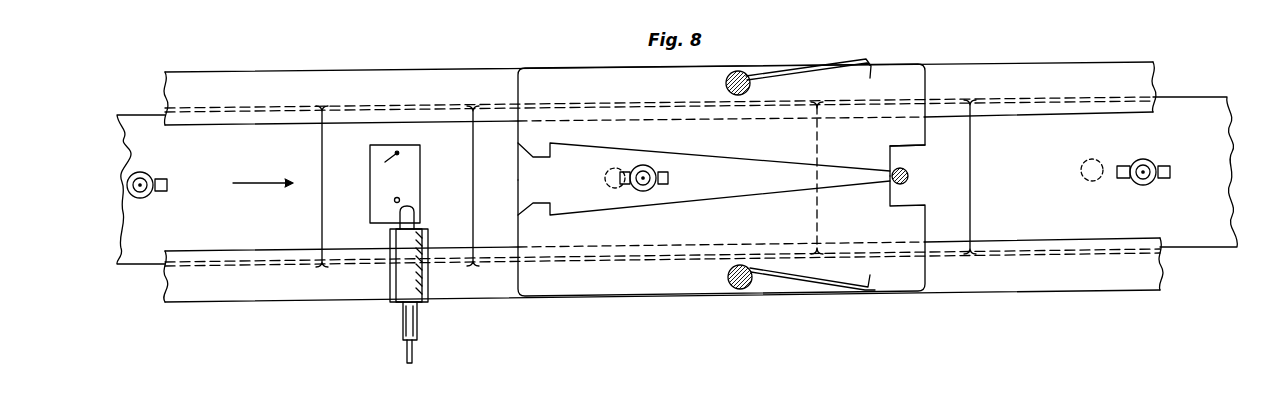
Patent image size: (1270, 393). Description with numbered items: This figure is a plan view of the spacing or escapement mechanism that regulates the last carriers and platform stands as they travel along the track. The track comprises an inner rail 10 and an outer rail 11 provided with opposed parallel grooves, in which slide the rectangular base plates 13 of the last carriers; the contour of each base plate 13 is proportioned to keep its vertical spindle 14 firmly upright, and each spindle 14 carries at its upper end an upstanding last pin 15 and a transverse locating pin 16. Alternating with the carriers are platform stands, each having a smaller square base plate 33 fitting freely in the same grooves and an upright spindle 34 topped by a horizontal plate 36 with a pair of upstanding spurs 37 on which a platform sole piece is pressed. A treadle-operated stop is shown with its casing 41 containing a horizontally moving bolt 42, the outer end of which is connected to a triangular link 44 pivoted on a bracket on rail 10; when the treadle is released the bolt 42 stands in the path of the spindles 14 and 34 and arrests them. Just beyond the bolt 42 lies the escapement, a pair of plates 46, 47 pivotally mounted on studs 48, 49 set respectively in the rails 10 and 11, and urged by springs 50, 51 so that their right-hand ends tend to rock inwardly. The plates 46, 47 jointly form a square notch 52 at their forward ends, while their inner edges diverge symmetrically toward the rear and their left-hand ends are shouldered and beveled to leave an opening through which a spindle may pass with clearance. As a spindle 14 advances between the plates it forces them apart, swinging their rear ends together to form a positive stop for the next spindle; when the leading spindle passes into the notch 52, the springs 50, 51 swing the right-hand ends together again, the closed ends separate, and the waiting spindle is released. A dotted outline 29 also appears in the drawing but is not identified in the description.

The inner rail 10 is at (337, 290).
The outer rail 11 is at (373, 78).
The base plate 13 is at (138, 122).
The vertical spindle 14 is at (151, 175).
The last pin 15 is at (640, 176).
The transverse locating pin 16 is at (168, 185).
The roller phantom position 29 is at (604, 178).
The base plate 33 is at (380, 133).
The upright spindle 34 is at (910, 176).
The horizontal plate 36 is at (413, 145).
The upstanding spurs 37 is at (394, 200).
The casing 41 is at (410, 244).
The bolt 42 is at (404, 320).
The triangular link 44 is at (414, 358).
The escapement plate 46 is at (612, 280).
The escapement plate 47 is at (616, 80).
The stud 48 is at (742, 290).
The stud 49 is at (747, 76).
The spring 50 is at (806, 286).
The spring 51 is at (817, 72).
The square notch 52 is at (925, 148).